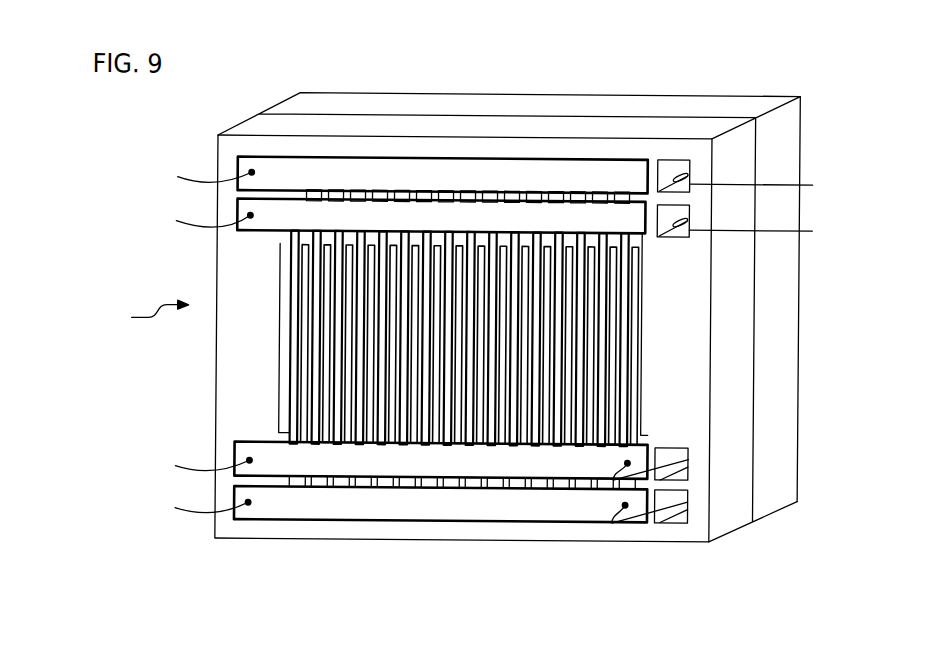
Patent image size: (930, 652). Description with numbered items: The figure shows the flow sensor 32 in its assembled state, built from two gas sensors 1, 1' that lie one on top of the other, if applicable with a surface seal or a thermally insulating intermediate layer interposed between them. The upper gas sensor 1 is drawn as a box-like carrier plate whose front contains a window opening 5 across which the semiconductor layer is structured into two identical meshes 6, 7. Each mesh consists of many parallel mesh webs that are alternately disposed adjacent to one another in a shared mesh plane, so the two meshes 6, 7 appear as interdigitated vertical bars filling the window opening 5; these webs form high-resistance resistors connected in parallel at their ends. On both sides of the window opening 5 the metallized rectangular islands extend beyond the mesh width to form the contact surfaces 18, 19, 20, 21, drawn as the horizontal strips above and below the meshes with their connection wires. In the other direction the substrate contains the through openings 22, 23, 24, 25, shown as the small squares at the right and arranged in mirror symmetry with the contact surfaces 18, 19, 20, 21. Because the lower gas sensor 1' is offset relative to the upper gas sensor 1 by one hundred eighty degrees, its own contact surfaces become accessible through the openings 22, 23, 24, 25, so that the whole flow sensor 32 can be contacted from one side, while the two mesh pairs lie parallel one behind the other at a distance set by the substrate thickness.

The gas sensor 1 is at (525, 317).
The gas sensor 1' is at (810, 298).
The window opening 5 is at (642, 305).
The mesh 6 is at (631, 382).
The mesh 7 is at (619, 344).
The contact surface 18 is at (253, 441).
The contact surface 19 is at (252, 155).
The contact surface 20 is at (251, 231).
The contact surface 21 is at (251, 519).
The through opening 22 is at (673, 444).
The through opening 23 is at (674, 162).
The through opening 24 is at (675, 236).
The through opening 25 is at (673, 520).
The flow sensor 32 is at (127, 329).